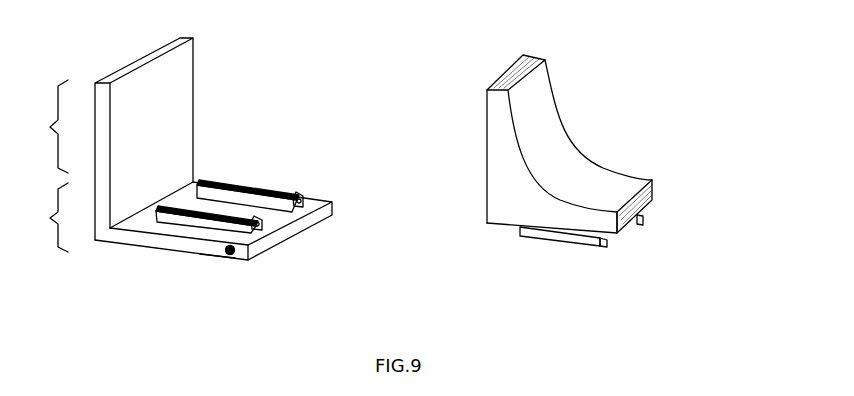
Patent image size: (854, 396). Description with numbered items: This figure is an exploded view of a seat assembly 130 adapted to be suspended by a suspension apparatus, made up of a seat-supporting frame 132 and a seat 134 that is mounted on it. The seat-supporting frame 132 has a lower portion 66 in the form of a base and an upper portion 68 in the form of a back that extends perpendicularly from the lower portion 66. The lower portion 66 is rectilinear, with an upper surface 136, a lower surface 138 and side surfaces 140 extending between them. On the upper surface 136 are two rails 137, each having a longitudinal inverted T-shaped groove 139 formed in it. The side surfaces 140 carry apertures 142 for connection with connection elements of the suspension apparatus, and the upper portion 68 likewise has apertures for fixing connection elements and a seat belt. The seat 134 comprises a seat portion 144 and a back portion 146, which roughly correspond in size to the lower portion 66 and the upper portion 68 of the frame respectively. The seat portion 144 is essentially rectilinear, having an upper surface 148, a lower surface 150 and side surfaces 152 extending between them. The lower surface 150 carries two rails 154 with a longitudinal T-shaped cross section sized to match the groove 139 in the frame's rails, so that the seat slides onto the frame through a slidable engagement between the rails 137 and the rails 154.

The seat assembly 130 is at (215, 174).
The seat-supporting frame 132 is at (226, 89).
The upper surface 136 is at (316, 199).
The rails 137 is at (209, 170).
The lower surface 138 is at (230, 256).
The inverted T-shaped groove 139 is at (258, 225).
The side surfaces 140 is at (132, 238).
The apertures 142 is at (217, 257).
The upper portion 68 is at (40, 126).
The lower portion 66 is at (40, 217).
The seat 134 is at (590, 181).
The seat portion 144 is at (653, 183).
The back portion 146 is at (498, 115).
The upper surface 148 is at (567, 160).
The lower surface 150 is at (510, 228).
The side surfaces 152 is at (507, 203).
The rails 154 is at (607, 243).